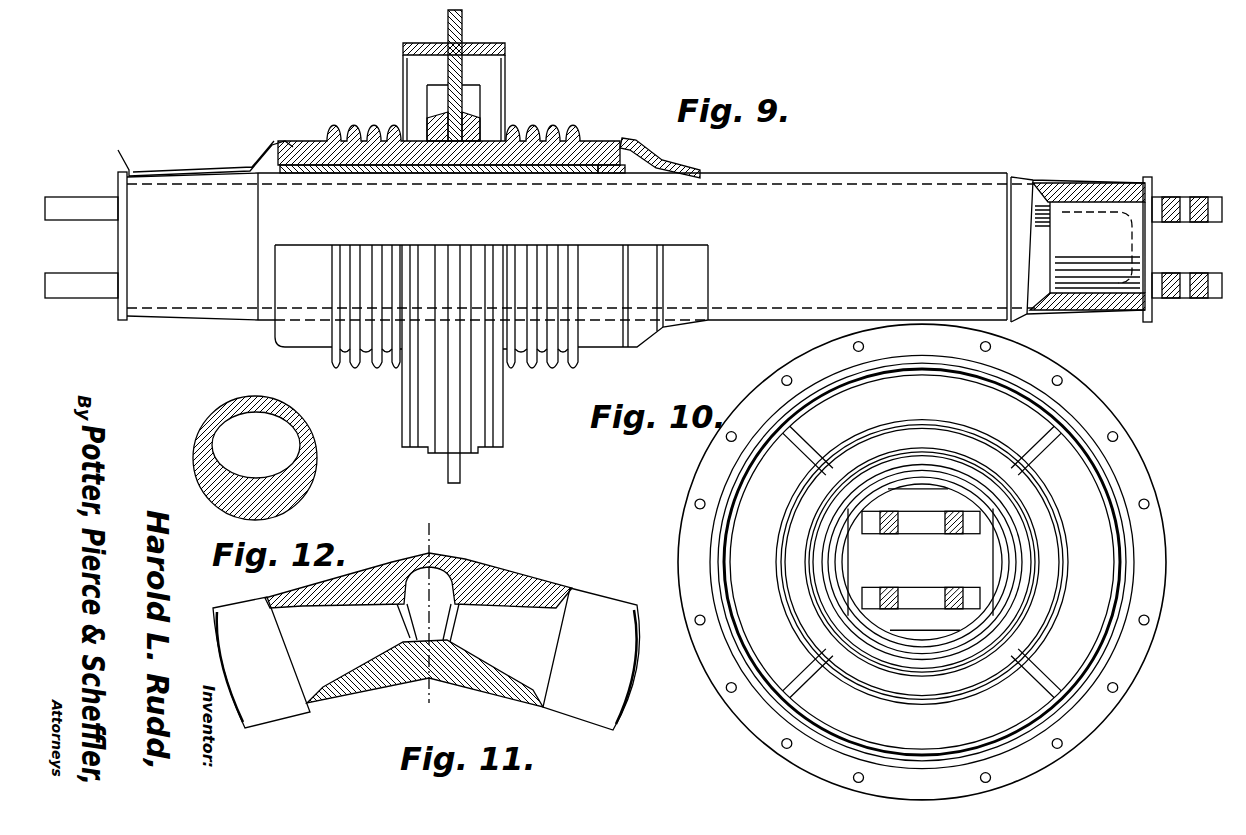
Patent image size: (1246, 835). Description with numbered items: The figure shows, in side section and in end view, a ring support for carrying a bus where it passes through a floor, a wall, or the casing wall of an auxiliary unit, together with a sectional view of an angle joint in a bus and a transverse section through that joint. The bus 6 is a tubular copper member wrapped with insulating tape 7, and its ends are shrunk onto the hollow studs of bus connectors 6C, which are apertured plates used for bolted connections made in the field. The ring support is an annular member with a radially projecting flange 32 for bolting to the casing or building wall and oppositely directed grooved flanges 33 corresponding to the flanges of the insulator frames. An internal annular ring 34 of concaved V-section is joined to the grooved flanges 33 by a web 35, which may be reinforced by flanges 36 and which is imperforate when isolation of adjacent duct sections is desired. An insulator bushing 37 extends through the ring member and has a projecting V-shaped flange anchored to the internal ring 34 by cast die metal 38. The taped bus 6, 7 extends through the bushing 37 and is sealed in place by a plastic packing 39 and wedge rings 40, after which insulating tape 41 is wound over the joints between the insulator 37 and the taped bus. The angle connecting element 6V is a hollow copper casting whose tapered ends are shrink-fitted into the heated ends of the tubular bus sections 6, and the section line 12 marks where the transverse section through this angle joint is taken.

In FIG. 9, the bus 6 is at (1058, 179).
In FIG. 11, the bus 6 is at (336, 704).
In FIG. 9, the bus connector 6C is at (1125, 247).
In FIG. 10, the bus connector 6C is at (922, 561).
In FIG. 11, the angle connecting element 6V is at (453, 557).
In FIG. 12, the angle connecting element 6V is at (277, 458).
In FIG. 9, the insulating tape 7 is at (1040, 182).
In FIG. 11, the section line 12- 12 is at (432, 613).
In FIG. 9, the radially projecting flange 32 is at (448, 18).
In FIG. 10, the radially projecting flange 32 is at (1072, 383).
In FIG. 9, the grooved flanges 33 is at (490, 58).
In FIG. 10, the grooved flanges 33 is at (720, 492).
In FIG. 9, the internal annular ring 34 is at (427, 112).
In FIG. 10, the internal annular ring 34 is at (890, 431).
In FIG. 9, the web 35 is at (448, 73).
In FIG. 10, the web 35 is at (737, 548).
In FIG. 9, the flanges 36 is at (473, 97).
In FIG. 10, the flanges 36 is at (805, 448).
In FIG. 9, the insulator bushing 37 is at (368, 363).
In FIG. 10, the insulator bushing 37 is at (823, 573).
In FIG. 9, the cast die metal 38 is at (477, 128).
In FIG. 9, the plastic packing 39 is at (536, 174).
In FIG. 9, the wedge rings 40 is at (608, 174).
In FIG. 9, the insulating tape 41 is at (264, 149).